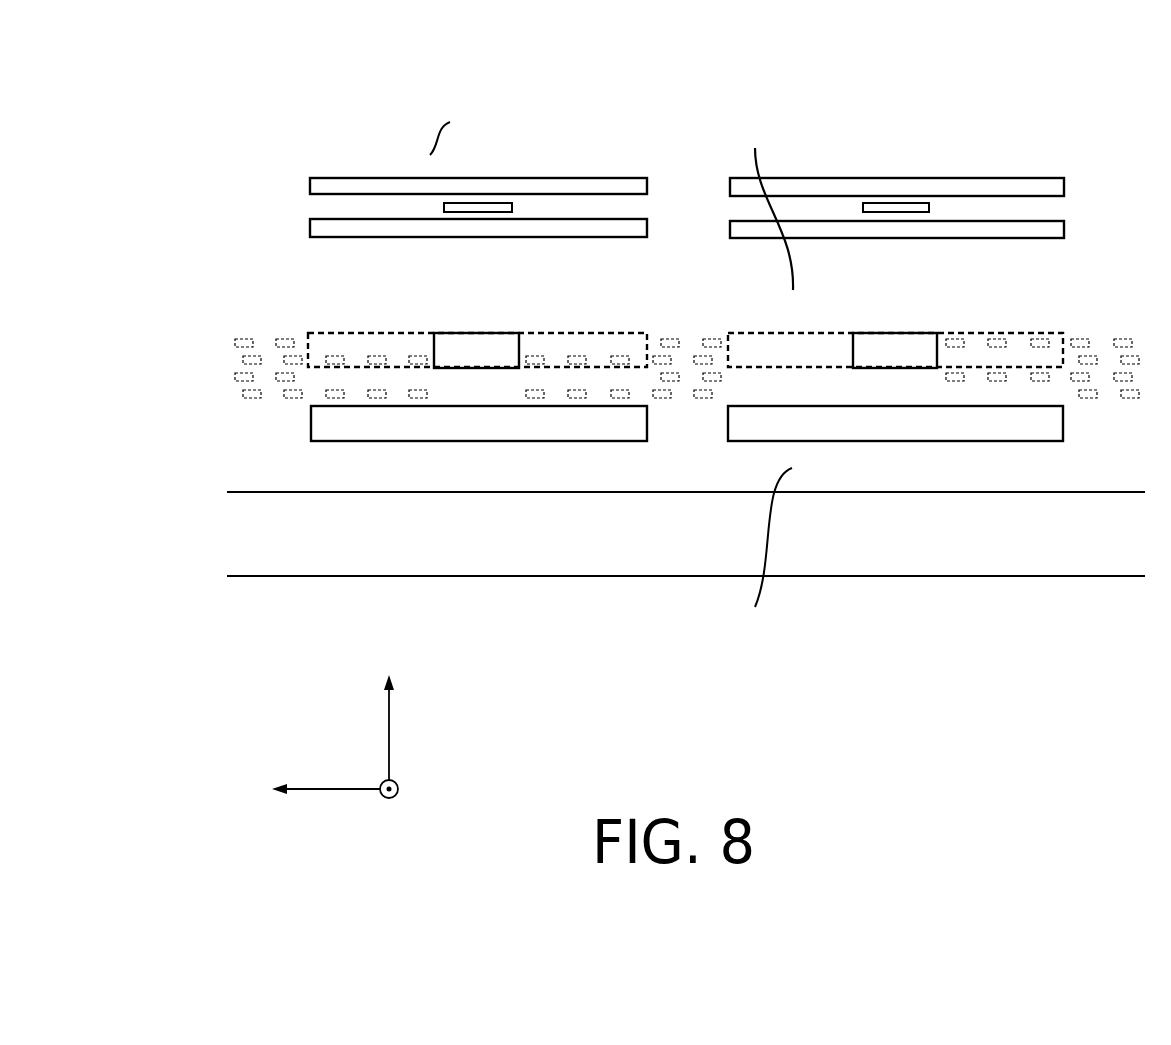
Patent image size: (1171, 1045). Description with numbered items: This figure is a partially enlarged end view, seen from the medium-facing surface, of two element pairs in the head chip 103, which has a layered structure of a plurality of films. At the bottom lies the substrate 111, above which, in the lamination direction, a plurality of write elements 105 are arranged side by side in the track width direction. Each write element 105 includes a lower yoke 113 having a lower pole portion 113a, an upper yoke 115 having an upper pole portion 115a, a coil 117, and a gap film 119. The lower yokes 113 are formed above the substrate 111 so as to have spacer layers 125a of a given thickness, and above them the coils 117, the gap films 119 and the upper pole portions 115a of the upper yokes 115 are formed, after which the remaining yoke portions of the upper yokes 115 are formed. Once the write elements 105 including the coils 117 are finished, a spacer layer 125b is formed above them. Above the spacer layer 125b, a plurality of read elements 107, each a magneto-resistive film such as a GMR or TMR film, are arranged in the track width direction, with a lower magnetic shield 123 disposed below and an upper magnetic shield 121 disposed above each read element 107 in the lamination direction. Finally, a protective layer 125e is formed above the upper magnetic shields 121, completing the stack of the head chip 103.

The head chip 103 is at (184, 70).
The write element 105 is at (699, 310).
The read element 107 is at (512, 207).
The substrate 111 is at (680, 558).
The lower yoke 113 is at (687, 524).
The lower pole portion 113a is at (515, 422).
The upper yoke 115 is at (685, 320).
The upper pole portion 115a is at (483, 343).
The coil 117 is at (290, 402).
The gap film 119 is at (687, 517).
The upper magnetic shield 121 is at (390, 178).
The lower magnetic shield 123 is at (585, 227).
The spacer layer 125a is at (763, 555).
The spacer layer 125b is at (766, 203).
The protective layer 125e is at (467, 126).